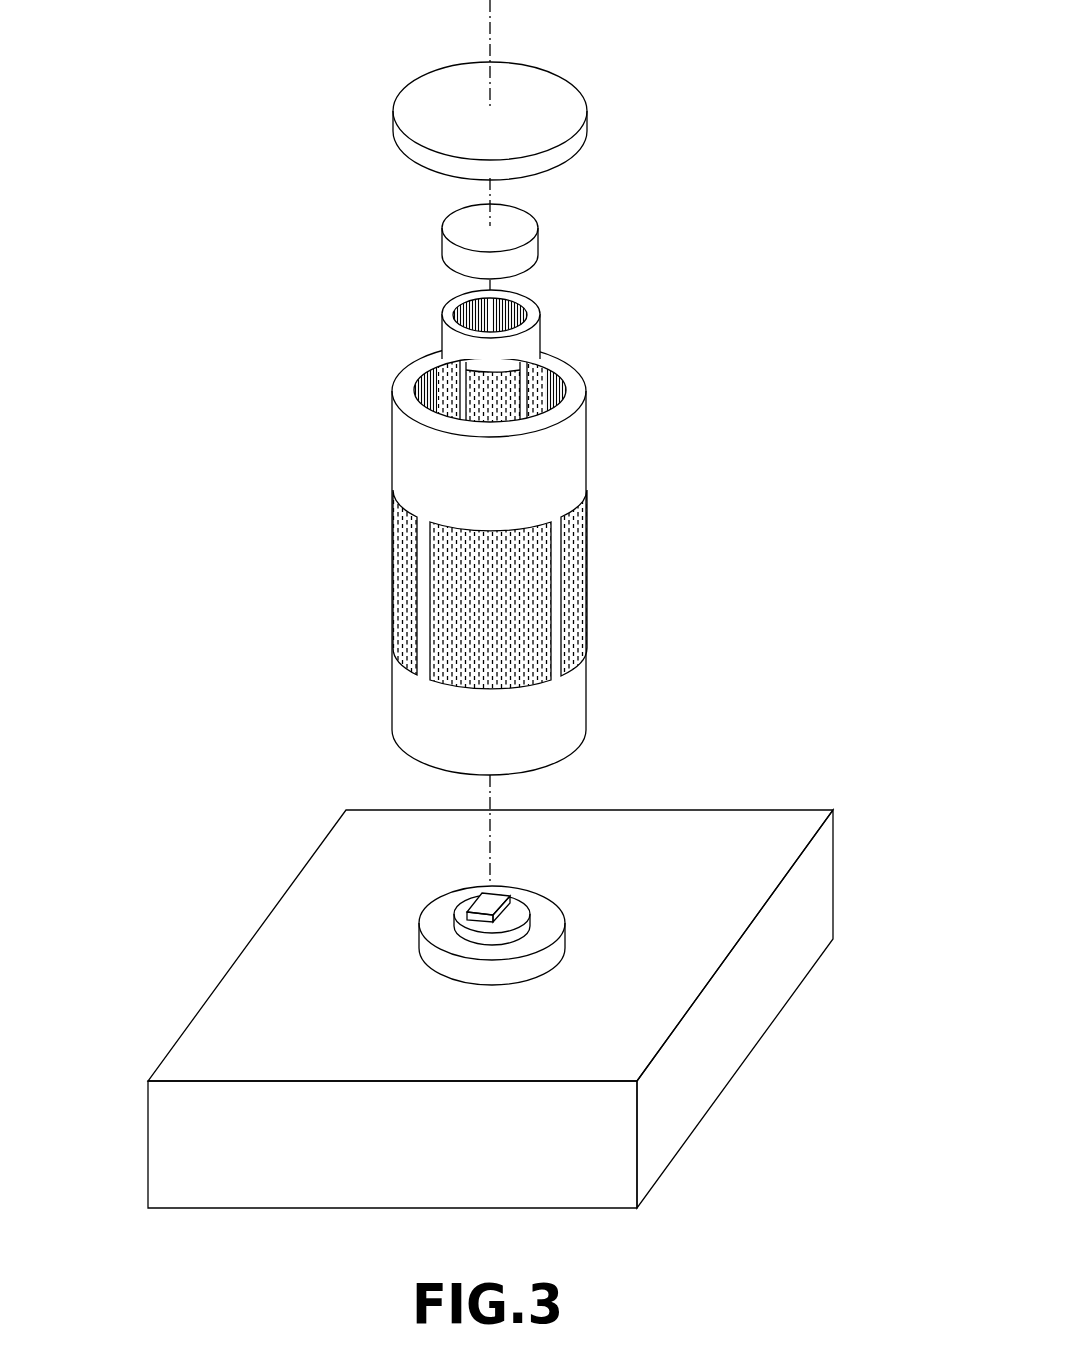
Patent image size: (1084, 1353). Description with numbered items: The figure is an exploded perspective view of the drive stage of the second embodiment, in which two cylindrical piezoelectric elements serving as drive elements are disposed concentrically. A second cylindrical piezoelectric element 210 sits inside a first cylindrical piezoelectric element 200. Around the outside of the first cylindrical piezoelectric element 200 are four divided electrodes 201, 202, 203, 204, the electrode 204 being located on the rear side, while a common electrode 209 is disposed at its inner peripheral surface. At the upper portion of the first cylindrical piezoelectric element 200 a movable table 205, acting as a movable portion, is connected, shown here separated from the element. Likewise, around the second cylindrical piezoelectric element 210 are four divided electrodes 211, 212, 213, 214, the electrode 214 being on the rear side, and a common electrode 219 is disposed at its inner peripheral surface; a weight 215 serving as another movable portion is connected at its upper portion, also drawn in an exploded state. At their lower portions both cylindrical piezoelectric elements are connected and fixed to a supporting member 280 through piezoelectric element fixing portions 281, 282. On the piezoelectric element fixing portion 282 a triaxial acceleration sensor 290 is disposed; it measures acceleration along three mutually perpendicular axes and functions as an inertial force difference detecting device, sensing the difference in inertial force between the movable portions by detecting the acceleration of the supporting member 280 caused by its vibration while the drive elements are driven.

The first cylindrical piezoelectric element 200 is at (540, 742).
The electrode 201 is at (576, 599).
The electrode 202 is at (530, 665).
The electrode 203 is at (402, 583).
The electrode 204 is at (588, 473).
The movable table 205 is at (415, 107).
The common electrode 209 is at (560, 388).
The second cylindrical piezoelectric element 210 is at (518, 296).
The electrode 211 is at (537, 383).
The electrode 212 is at (490, 398).
The electrode 213 is at (450, 392).
The electrode 214 is at (540, 330).
The weight 215 is at (445, 252).
The common electrode 219 is at (470, 313).
The supporting member 280 is at (695, 846).
The piezoelectric element fixing portion 281 is at (492, 975).
The piezoelectric element fixing portion 282 is at (521, 913).
The triaxial acceleration sensor 290 is at (484, 905).